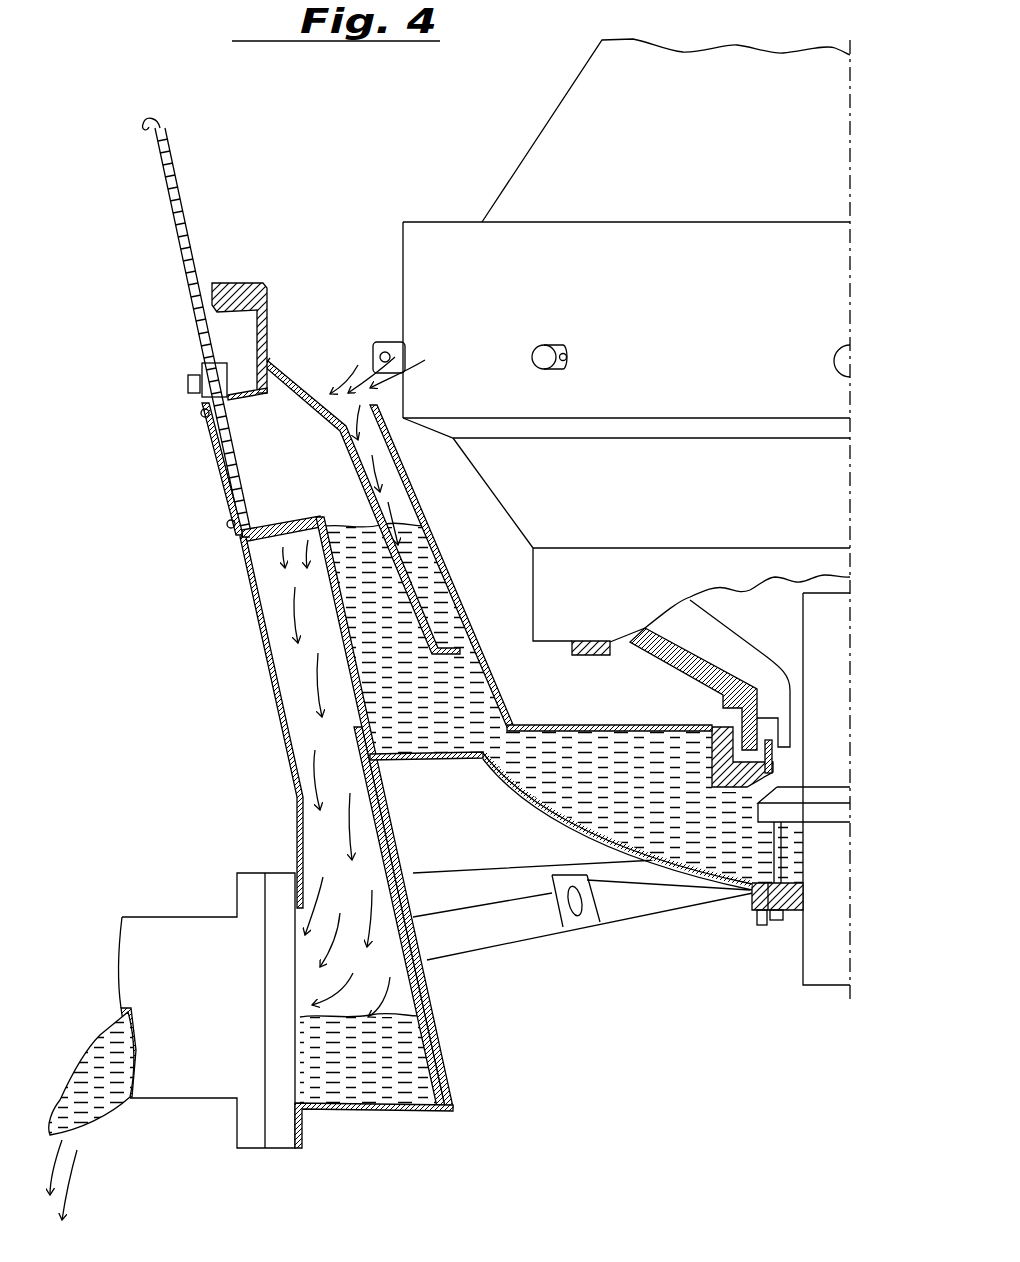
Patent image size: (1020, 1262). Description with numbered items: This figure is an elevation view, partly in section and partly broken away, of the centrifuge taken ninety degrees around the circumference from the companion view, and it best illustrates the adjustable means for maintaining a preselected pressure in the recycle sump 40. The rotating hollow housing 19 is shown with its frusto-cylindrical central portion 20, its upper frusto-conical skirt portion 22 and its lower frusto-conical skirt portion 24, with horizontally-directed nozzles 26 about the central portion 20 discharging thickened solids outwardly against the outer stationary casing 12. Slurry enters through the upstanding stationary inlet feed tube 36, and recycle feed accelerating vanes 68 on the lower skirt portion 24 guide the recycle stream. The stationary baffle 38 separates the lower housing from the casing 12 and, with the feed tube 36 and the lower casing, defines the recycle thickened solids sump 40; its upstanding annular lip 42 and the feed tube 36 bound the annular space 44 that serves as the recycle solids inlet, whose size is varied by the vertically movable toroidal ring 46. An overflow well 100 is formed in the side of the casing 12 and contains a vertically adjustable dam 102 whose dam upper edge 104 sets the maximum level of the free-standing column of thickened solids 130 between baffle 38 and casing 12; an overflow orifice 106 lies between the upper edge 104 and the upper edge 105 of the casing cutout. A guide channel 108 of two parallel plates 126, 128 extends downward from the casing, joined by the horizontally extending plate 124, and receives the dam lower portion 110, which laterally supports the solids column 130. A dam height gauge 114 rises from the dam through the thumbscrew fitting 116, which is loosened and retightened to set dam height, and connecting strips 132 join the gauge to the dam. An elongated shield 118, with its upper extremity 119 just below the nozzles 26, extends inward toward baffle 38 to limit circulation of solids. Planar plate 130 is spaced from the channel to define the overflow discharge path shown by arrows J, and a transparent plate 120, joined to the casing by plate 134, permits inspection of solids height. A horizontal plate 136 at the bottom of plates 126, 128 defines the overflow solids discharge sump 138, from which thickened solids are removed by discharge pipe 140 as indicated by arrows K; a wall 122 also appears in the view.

The outer stationary casing 12 is at (262, 284).
The hollow housing 19 is at (412, 218).
The frusto-cylindrical central portion 20 is at (455, 255).
The upper frusto-conical skirt portion 22 is at (568, 125).
The lower frusto-conical skirt portion 24 is at (527, 487).
The horizontally-directed nozzles 26 is at (388, 348).
The inlet feed tube 36 is at (830, 618).
The stationary baffle 38 is at (460, 592).
The recycle thickened solids sump 40 is at (690, 818).
The upstanding annular lip 42 is at (775, 757).
The annular space 44 is at (765, 788).
The toroidal ring 46 is at (838, 798).
The recycle feed accelerating vanes 68 is at (716, 645).
The overflow well 100 is at (203, 420).
The vertically adjustable dam 102 is at (326, 605).
The dam upper edge 104 is at (326, 518).
The upper edge of the cutout 105 is at (273, 392).
The overflow orifice 106 is at (297, 476).
The guide channel 108 is at (445, 998).
The dam lower portion 110 is at (405, 876).
The dam height gauge 114 is at (178, 194).
The thumbscrew fitting 116 is at (192, 370).
The elongated shield 118 is at (292, 382).
The upper extremity of shield 119 is at (268, 363).
The transparent plate 120 is at (210, 452).
The wall 122 is at (300, 718).
The horizontally extending plate 124 is at (420, 760).
The first downwardly extending plate 126 is at (452, 1096).
The second downwardly extending plate 128 is at (437, 1106).
The planar plate 130 is at (272, 688).
The connecting strips 132 is at (268, 527).
The plate 134 is at (252, 390).
The horizontal plate 136 is at (412, 1108).
The overflow solids discharge sump 138 is at (353, 1085).
The discharge pipe 140 is at (152, 938).
The arrows J is at (317, 750).
The arrows K is at (75, 1173).